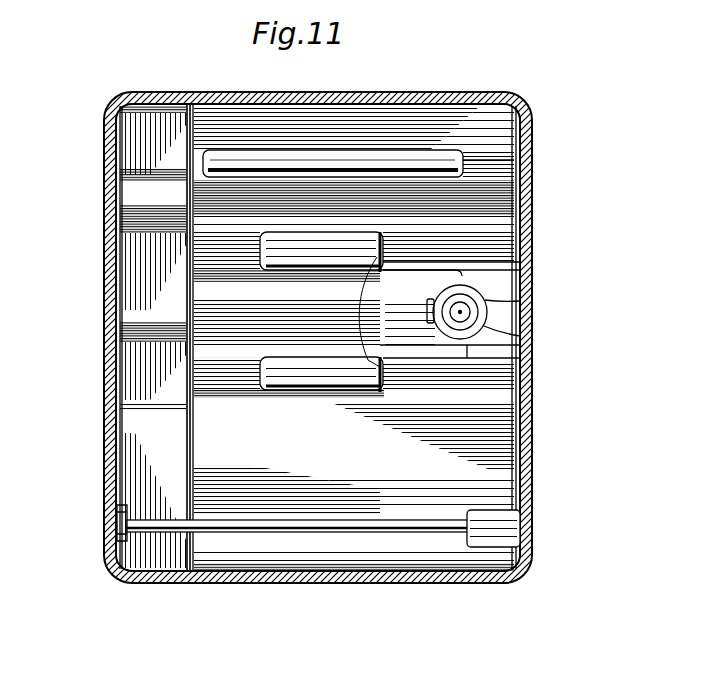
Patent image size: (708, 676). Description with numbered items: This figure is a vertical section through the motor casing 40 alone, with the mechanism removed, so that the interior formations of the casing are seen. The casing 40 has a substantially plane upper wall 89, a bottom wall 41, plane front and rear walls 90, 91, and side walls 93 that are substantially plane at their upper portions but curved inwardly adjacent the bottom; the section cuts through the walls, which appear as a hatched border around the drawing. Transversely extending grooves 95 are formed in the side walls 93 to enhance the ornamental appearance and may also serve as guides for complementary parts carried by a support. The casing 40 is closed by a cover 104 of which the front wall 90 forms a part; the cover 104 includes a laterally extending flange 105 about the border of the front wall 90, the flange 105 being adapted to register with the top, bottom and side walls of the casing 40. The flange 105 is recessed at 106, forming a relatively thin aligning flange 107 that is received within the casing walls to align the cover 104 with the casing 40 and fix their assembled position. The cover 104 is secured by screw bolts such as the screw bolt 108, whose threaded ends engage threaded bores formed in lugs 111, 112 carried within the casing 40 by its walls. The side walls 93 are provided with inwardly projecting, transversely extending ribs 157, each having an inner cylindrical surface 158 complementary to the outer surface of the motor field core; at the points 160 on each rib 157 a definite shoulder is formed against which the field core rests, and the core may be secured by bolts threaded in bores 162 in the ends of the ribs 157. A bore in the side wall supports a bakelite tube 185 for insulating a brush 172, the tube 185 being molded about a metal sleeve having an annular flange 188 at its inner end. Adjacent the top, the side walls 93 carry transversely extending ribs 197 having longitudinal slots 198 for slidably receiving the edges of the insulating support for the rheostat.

The motor casing 40 is at (530, 500).
The bottom wall 41 is at (285, 583).
The upper wall 89 is at (348, 92).
The front wall 90 is at (104, 462).
The rear wall 91 is at (520, 452).
The side wall 93 is at (500, 425).
The transversely extending grooves 95 is at (135, 197).
The cover 104 is at (105, 264).
The laterally extending flange 105 is at (130, 92).
The recess 106 is at (178, 100).
The aligning flange 107 is at (205, 92).
The screw bolt 108 is at (388, 525).
The lug 111 is at (508, 527).
The lug 112 is at (283, 260).
The ribs 157 is at (517, 273).
The inner cylindrical surface 158 is at (307, 255).
The shoulder points 160 is at (330, 312).
The bores 162 is at (272, 395).
The brush 172 is at (470, 311).
The bakelite tubes 185 is at (520, 345).
The annular flanges 188 is at (475, 322).
The transversely extending ribs 197 is at (505, 162).
The longitudinal slots 198 is at (405, 158).